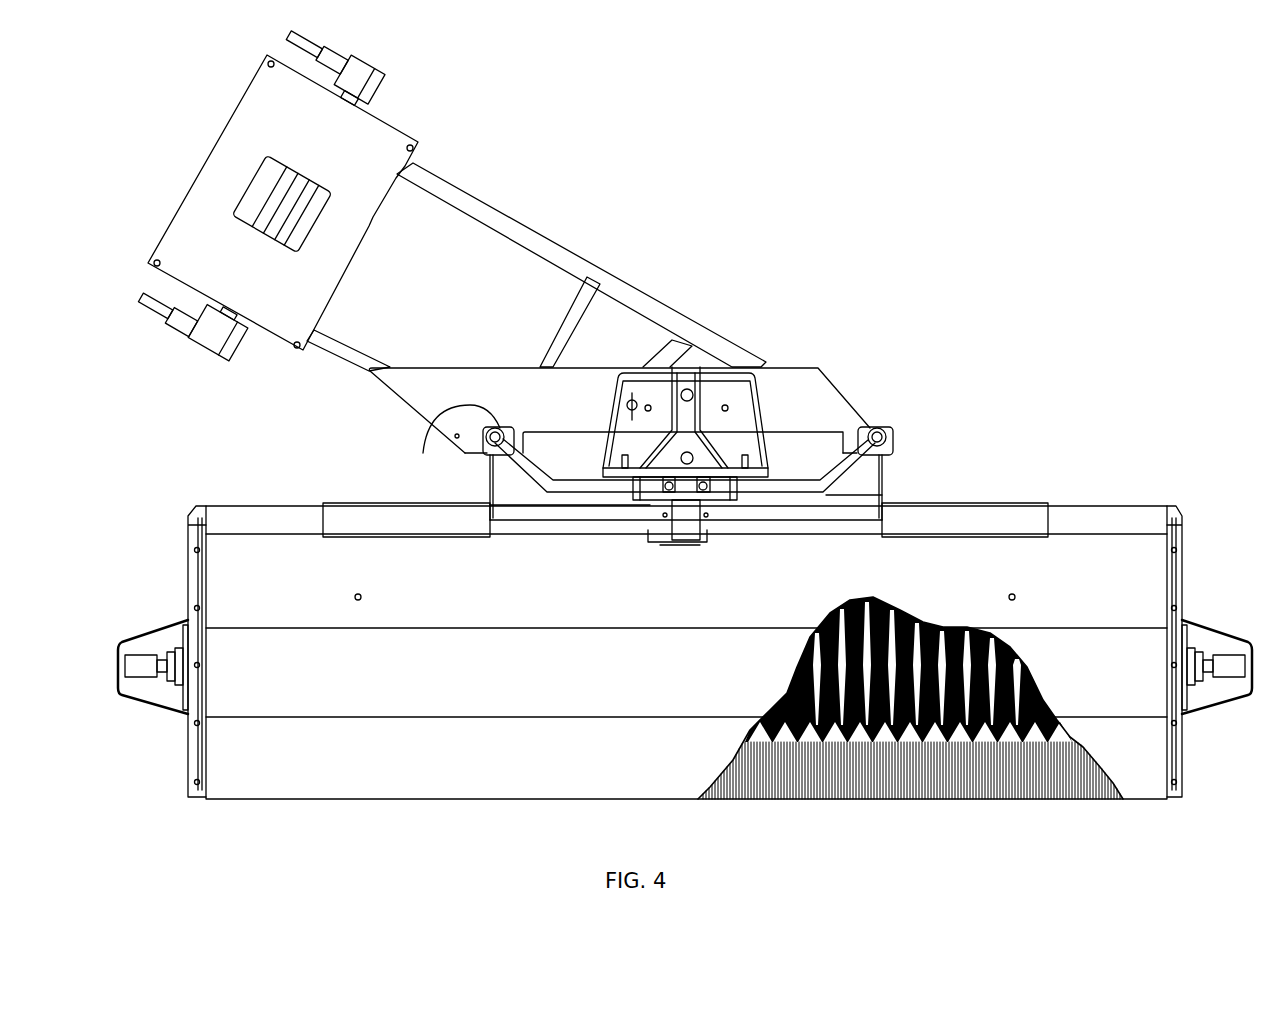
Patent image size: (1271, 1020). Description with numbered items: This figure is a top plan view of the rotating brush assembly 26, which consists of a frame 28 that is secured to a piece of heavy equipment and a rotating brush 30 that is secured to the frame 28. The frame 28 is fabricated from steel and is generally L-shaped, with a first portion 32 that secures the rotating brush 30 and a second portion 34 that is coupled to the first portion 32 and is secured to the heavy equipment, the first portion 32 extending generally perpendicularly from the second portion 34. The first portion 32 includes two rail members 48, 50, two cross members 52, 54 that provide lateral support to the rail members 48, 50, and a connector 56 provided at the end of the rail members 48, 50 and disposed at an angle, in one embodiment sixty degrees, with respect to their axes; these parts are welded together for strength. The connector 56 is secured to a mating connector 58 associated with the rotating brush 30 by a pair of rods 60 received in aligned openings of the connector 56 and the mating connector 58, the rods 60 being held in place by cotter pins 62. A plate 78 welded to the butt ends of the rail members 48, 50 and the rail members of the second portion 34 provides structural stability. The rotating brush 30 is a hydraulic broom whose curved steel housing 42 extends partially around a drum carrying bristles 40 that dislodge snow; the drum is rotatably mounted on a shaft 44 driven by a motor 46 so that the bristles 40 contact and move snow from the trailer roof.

The rotating brush assembly 26 is at (672, 178).
The frame 28 is at (538, 220).
The rotating brush 30 is at (398, 805).
The first portion 32 is at (660, 302).
The second portion 34 is at (386, 92).
The bristles 40 is at (977, 795).
The housing 42 is at (998, 560).
The shaft 44 is at (183, 653).
The motor 46 is at (1208, 627).
The rail member 48 is at (452, 183).
The rail member 50 is at (328, 366).
The cross member 52 is at (672, 346).
The cross member 54 is at (588, 298).
The connector 56 is at (790, 417).
The mating connector 58 is at (545, 513).
The rod 60 is at (420, 417).
The cotter pin 62 is at (505, 426).
The plate 78 is at (196, 232).